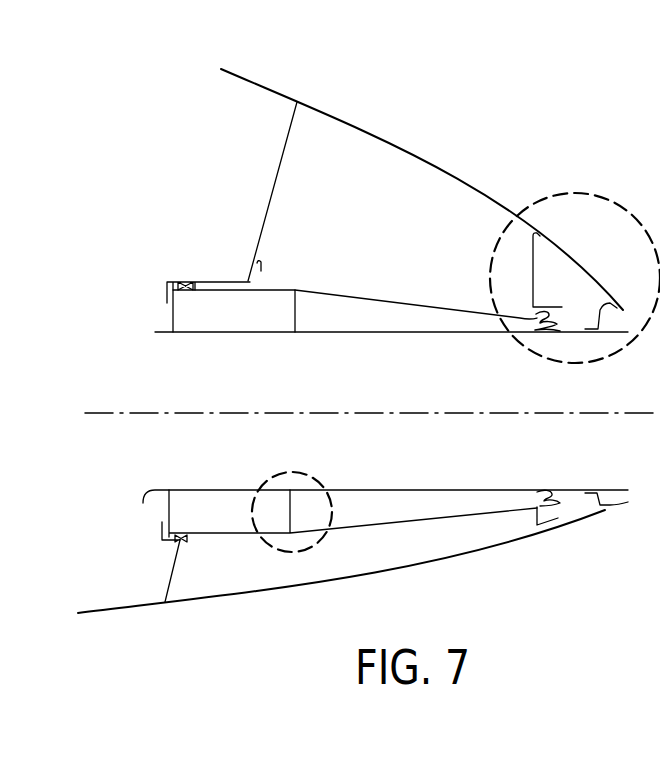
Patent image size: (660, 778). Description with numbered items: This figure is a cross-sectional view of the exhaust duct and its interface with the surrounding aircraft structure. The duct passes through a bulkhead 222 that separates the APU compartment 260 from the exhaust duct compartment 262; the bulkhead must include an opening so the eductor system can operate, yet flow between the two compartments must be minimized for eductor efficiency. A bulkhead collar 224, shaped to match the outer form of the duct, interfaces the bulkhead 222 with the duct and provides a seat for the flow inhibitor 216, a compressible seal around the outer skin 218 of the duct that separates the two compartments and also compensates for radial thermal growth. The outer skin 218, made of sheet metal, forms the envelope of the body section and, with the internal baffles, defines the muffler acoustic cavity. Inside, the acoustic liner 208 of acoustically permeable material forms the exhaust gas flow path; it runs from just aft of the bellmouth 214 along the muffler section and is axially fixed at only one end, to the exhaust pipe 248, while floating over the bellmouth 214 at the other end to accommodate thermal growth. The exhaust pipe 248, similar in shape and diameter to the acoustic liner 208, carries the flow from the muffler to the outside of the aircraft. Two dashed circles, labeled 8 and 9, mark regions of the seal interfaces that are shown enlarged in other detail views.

The APU compartment 260 is at (257, 141).
The exhaust duct compartment 262 is at (457, 264).
The bulkhead 222 is at (283, 168).
The bulkhead collar 224 is at (194, 282).
The outer skin 218 is at (344, 291).
The bellmouth 214 is at (155, 332).
The acoustic liner 208 is at (406, 334).
The exhaust pipe 248 is at (578, 334).
The flow inhibitor 216 is at (182, 540).
The detail view circle 9 is at (573, 193).
The detail view circle 8 is at (318, 480).